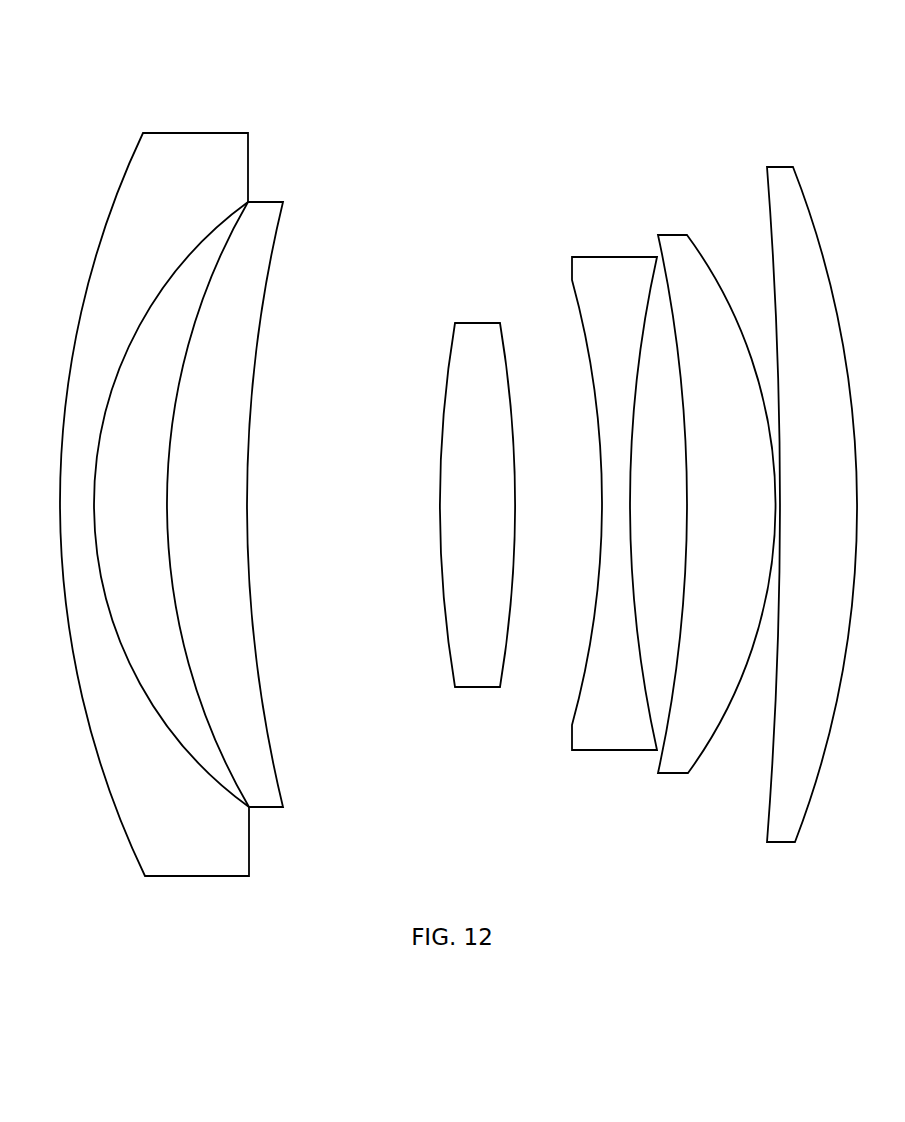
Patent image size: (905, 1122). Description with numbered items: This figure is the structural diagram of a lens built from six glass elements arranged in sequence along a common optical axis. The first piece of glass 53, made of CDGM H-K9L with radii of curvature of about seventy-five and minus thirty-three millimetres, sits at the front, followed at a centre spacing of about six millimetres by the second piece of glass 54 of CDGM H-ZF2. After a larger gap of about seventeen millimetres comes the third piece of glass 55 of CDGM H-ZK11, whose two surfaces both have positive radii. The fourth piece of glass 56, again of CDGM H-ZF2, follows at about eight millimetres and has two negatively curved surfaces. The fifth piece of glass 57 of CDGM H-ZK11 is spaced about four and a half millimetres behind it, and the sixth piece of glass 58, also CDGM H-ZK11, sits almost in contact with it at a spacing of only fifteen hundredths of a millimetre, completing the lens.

The first piece of glass 53 is at (152, 208).
The second piece of glass 54 is at (255, 263).
The third piece of glass 55 is at (485, 368).
The fourth piece of glass 56 is at (605, 307).
The fifth piece of glass 57 is at (693, 282).
The sixth piece of glass 58 is at (800, 260).